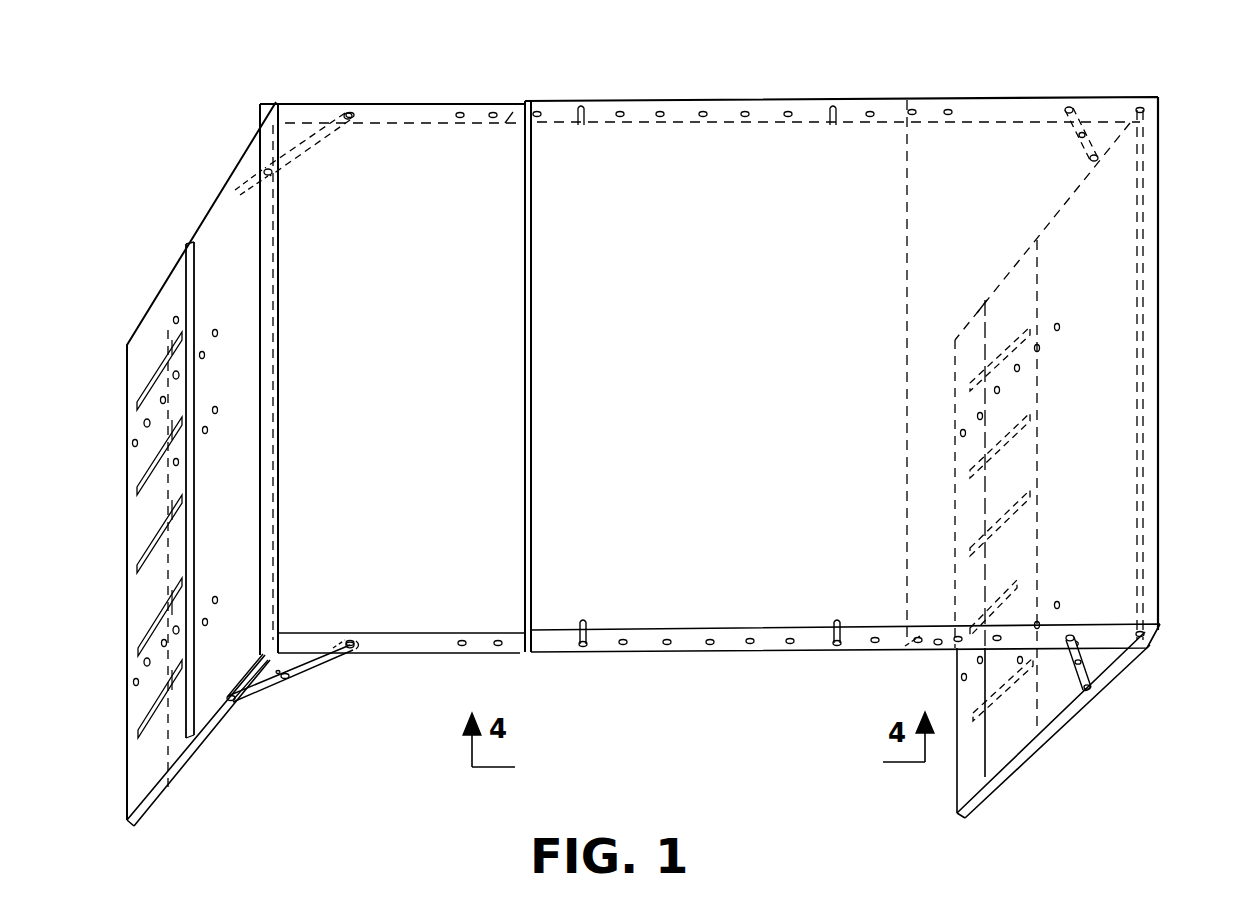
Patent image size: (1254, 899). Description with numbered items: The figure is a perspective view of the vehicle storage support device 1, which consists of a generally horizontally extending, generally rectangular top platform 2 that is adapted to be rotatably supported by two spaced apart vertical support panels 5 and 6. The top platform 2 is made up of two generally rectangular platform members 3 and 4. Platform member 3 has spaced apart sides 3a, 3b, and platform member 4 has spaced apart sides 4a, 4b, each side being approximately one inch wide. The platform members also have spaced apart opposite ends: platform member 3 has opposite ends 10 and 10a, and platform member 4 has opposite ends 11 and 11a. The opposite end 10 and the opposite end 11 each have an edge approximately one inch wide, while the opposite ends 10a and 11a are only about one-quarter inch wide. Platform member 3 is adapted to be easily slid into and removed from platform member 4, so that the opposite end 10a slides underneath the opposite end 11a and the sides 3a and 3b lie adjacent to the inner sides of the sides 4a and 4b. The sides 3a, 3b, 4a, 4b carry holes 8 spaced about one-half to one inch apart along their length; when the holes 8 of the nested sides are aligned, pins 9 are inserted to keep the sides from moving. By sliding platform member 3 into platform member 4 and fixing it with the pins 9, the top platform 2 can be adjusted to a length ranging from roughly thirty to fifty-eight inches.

The vehicle storage support device 1 is at (730, 80).
The top platform 2 is at (413, 104).
The platform member 3 is at (507, 104).
The side 3a is at (355, 648).
The side 3b is at (308, 108).
The platform member 4 is at (992, 97).
The side 4a is at (938, 645).
The side 4b is at (1117, 95).
The vertical support panel 5 is at (207, 717).
The vertical support panel 6 is at (1073, 712).
The holes 8 is at (625, 643).
The pins 9 is at (583, 645).
The opposite end 10 is at (278, 245).
The opposite end 10a is at (908, 152).
The opposite end 11 is at (1158, 272).
The opposite end 11a is at (527, 383).